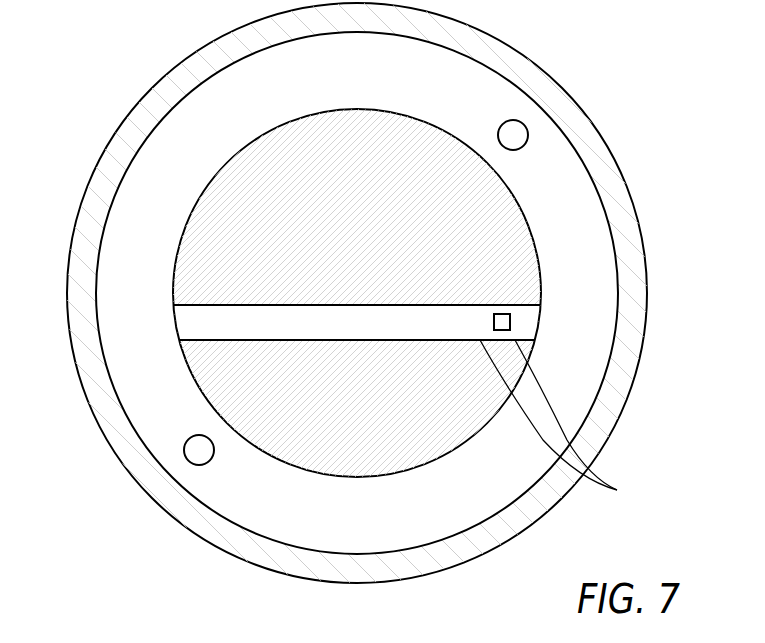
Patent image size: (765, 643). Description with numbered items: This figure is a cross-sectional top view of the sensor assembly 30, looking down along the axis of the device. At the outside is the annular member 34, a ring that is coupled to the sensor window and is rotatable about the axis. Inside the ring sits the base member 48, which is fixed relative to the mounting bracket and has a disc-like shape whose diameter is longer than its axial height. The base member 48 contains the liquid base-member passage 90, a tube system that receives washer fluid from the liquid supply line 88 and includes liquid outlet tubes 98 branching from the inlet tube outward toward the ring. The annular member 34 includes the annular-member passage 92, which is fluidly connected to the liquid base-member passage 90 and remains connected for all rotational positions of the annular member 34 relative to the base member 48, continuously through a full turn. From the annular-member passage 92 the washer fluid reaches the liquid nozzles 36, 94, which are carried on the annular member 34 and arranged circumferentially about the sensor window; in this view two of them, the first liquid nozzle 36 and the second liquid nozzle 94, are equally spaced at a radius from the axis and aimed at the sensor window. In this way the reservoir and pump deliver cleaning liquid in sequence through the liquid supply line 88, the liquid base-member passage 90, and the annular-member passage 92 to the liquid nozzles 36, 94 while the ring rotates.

The sensor assembly 30 is at (78, 50).
The annular member 34 is at (90, 173).
The first liquid nozzle 36 is at (529, 136).
The base member 48 is at (440, 131).
The liquid supply line 88 is at (511, 322).
The liquid base-member passage 90 is at (517, 305).
The annular-member passage 92 is at (613, 360).
The liquid nozzle 94 is at (198, 466).
The liquid outlet tubes 98 is at (565, 424).